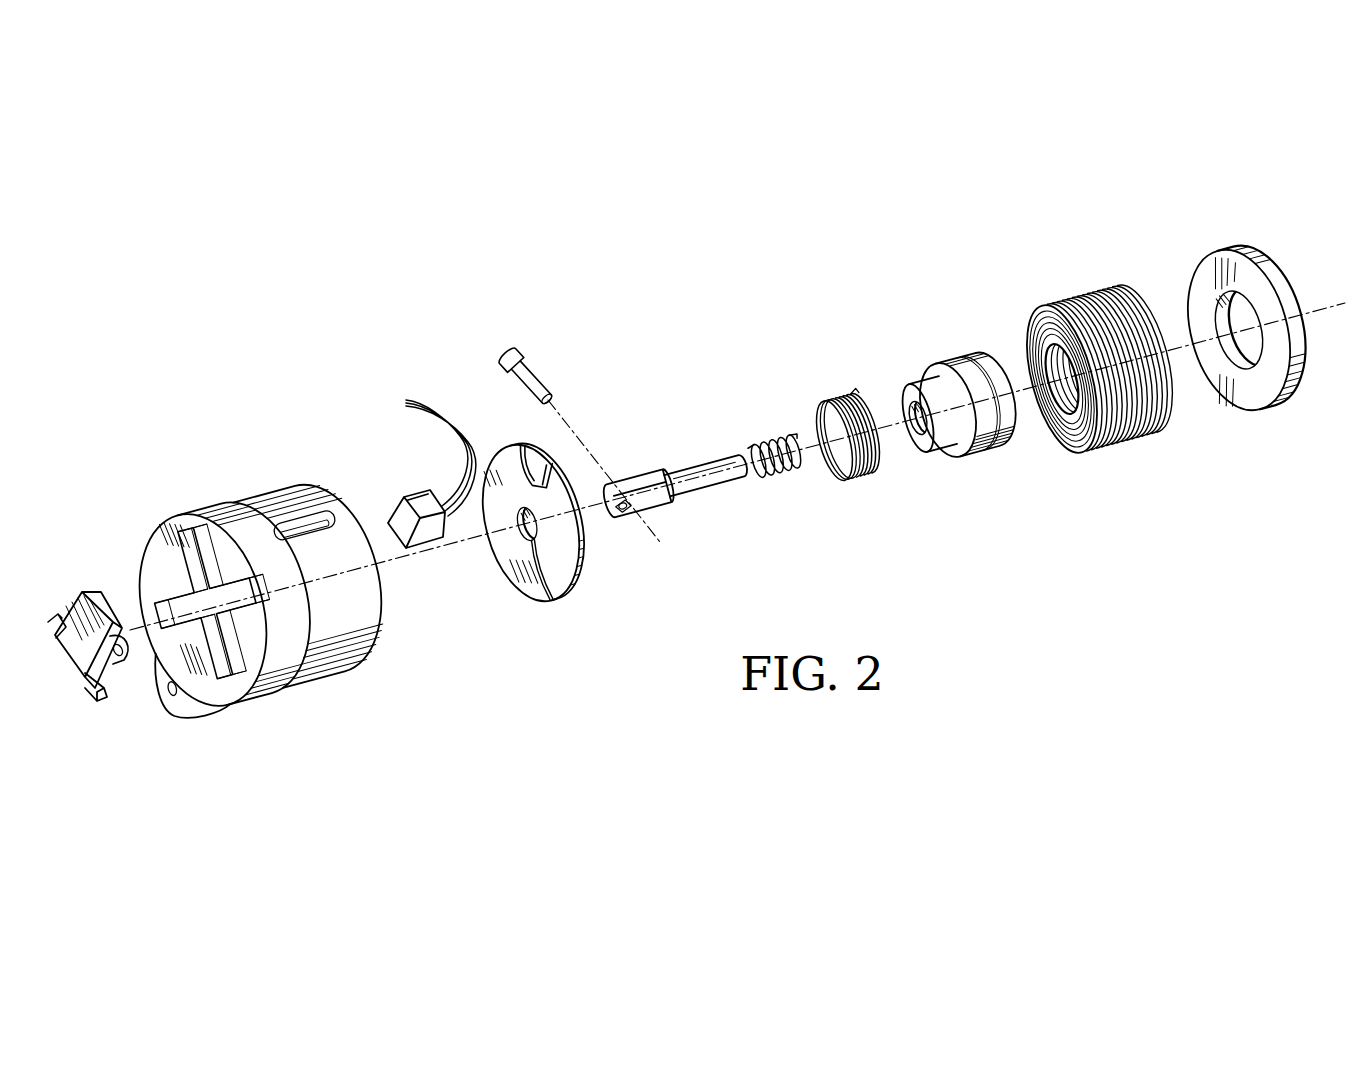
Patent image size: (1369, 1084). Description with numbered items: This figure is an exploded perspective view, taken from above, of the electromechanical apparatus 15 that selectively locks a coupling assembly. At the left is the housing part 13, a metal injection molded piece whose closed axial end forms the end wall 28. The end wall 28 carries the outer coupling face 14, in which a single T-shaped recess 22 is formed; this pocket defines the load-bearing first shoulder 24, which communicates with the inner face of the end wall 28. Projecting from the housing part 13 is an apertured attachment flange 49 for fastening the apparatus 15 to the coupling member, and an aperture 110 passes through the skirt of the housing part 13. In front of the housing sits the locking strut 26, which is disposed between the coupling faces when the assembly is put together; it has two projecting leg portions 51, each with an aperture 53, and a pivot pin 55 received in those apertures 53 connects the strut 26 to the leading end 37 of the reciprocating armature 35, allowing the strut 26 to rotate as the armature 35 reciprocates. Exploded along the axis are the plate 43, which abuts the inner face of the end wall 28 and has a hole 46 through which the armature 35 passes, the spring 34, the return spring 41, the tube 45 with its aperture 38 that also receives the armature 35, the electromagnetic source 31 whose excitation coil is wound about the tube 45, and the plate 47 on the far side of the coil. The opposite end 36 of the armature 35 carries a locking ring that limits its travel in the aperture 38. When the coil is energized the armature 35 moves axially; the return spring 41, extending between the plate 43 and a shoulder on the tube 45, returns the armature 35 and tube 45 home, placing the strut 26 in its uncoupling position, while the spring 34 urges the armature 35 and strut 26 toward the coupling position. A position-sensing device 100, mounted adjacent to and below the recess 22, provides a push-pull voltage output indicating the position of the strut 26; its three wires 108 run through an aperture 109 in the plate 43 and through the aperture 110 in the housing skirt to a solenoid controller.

The housing part 13 is at (255, 490).
The outer coupling face 14 is at (303, 675).
The electromechanical apparatus 15 is at (1007, 245).
The recess 22 is at (198, 572).
The first shoulder 24 is at (243, 680).
The locking strut 26 is at (84, 688).
The end wall 28 is at (212, 503).
The electromagnetic source 31 is at (1125, 450).
The spring 34 is at (785, 472).
The reciprocating armature 35 is at (705, 492).
The opposite end 36 is at (722, 462).
The leading end 37 is at (620, 482).
The aperture 38 is at (935, 448).
The return spring 41 is at (865, 465).
The plate 43 is at (583, 565).
The tube 45 is at (977, 455).
The hole 46 is at (546, 595).
The plate 47 is at (1258, 415).
The apertured attachment flange 49 is at (182, 715).
The projecting leg portion 51 is at (126, 666).
The aperture 53 is at (130, 628).
The pivot pin 55 is at (528, 350).
The device 100 is at (417, 549).
The wires 108 is at (420, 454).
The aperture 109 is at (522, 463).
The aperture 110 is at (325, 505).